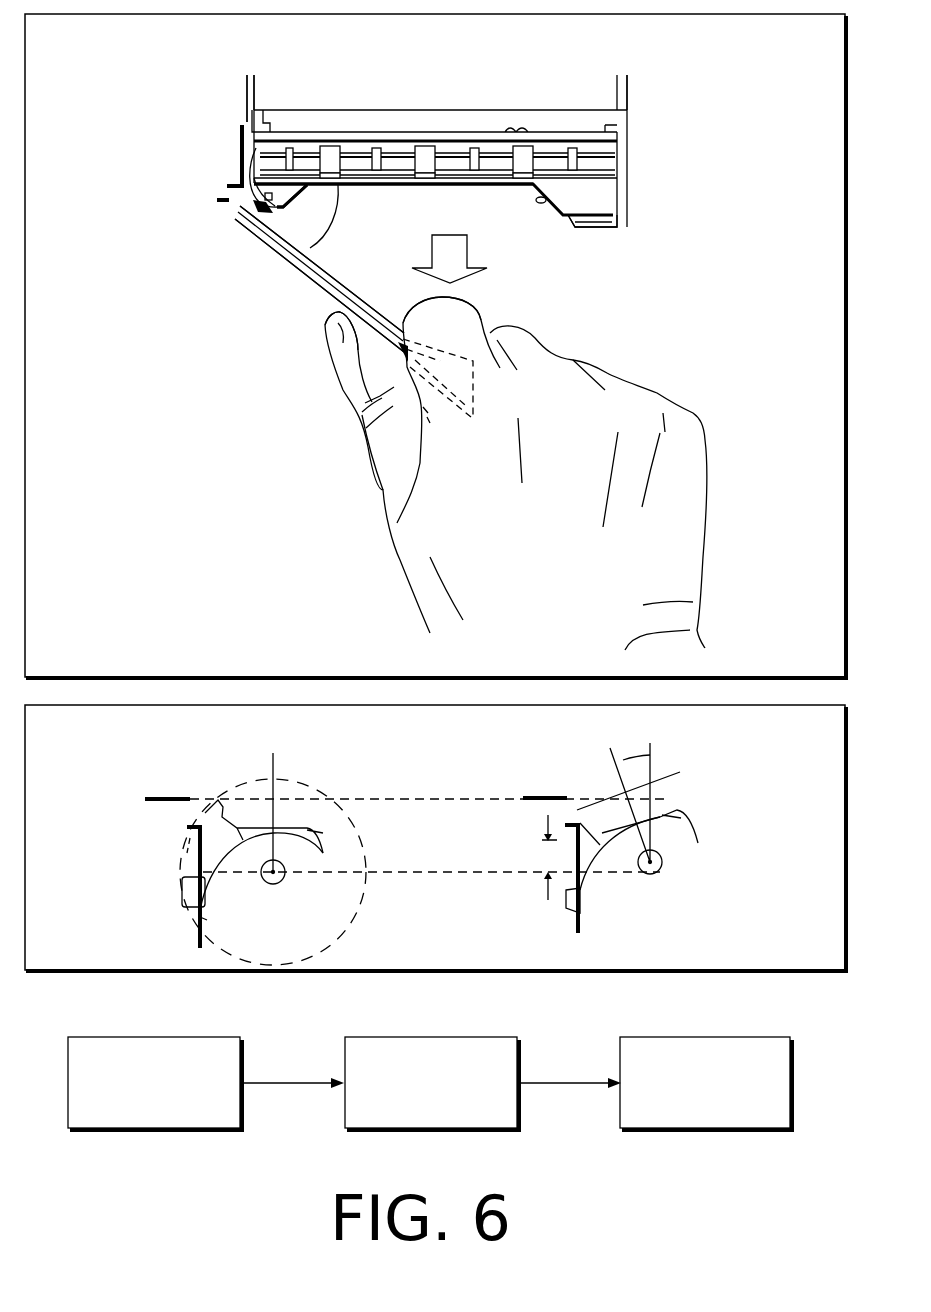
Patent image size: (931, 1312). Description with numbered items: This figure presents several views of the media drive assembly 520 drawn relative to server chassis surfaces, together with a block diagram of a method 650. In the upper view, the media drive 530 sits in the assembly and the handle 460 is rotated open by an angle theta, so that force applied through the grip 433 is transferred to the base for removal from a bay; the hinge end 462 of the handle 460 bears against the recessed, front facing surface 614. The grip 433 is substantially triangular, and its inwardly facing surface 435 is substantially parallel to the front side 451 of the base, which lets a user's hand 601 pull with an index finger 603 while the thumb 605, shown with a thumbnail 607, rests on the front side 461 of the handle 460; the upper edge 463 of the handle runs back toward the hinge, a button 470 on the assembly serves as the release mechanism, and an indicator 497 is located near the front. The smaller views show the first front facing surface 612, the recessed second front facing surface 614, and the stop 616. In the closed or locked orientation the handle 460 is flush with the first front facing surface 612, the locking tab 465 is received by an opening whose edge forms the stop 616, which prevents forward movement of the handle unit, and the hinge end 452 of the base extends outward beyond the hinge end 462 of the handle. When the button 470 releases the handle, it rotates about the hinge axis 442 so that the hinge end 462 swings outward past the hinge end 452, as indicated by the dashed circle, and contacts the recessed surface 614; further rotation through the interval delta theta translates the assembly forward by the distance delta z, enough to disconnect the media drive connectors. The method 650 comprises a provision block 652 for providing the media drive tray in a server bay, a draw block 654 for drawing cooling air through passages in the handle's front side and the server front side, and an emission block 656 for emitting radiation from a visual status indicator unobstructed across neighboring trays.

The assembly 520 is at (202, 54).
The media drive 530 is at (250, 121).
The hinge axis 442 is at (245, 160).
The recessed, second front facing surface 614 is at (228, 185).
The first front facing surface 612 is at (215, 201).
The hinge end of the handle 462 is at (236, 207).
The handle 460 is at (300, 259).
The front side of the handle 461 is at (322, 288).
The handle upper edge 463 is at (335, 278).
The front side of the base 451 is at (433, 185).
The light emitter 497 is at (540, 205).
The button 470 is at (592, 229).
The index finger 603 is at (470, 318).
The inwardly facing surface 435 is at (458, 361).
The grip 433 is at (457, 378).
The thumbnail 607 is at (340, 345).
The thumb 605 is at (382, 446).
The hand 601 is at (583, 528).
The stop 616 is at (200, 873).
The locking tab 465 is at (187, 892).
The hinge end of the base 452 is at (200, 918).
The method 650 is at (88, 1023).
The provision block 652 is at (202, 1036).
The draw block 654 is at (483, 1036).
The emission block 656 is at (758, 1036).